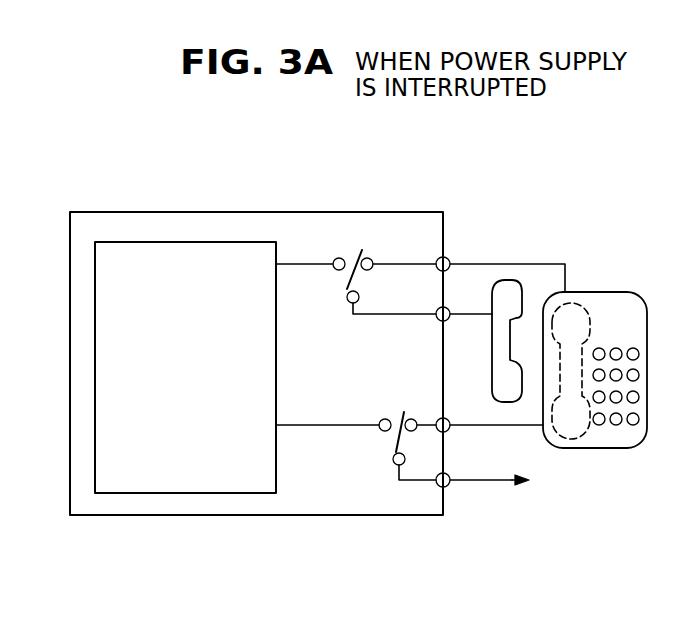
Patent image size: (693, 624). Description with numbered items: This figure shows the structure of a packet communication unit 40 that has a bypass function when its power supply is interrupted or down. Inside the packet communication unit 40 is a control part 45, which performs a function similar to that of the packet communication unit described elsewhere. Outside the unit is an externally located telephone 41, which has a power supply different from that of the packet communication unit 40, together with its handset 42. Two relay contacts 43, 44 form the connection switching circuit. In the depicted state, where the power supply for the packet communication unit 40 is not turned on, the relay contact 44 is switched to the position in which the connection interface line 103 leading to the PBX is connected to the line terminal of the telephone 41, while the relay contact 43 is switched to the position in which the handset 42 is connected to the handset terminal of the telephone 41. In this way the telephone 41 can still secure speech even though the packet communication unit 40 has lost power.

The packet communication unit 40 is at (130, 213).
The externally located telephone 41 is at (612, 292).
The handset 42 is at (518, 280).
The relay contact 43 is at (352, 253).
The relay contact 44 is at (390, 448).
The control part 45 is at (157, 493).
The connection interface line 103 is at (483, 482).